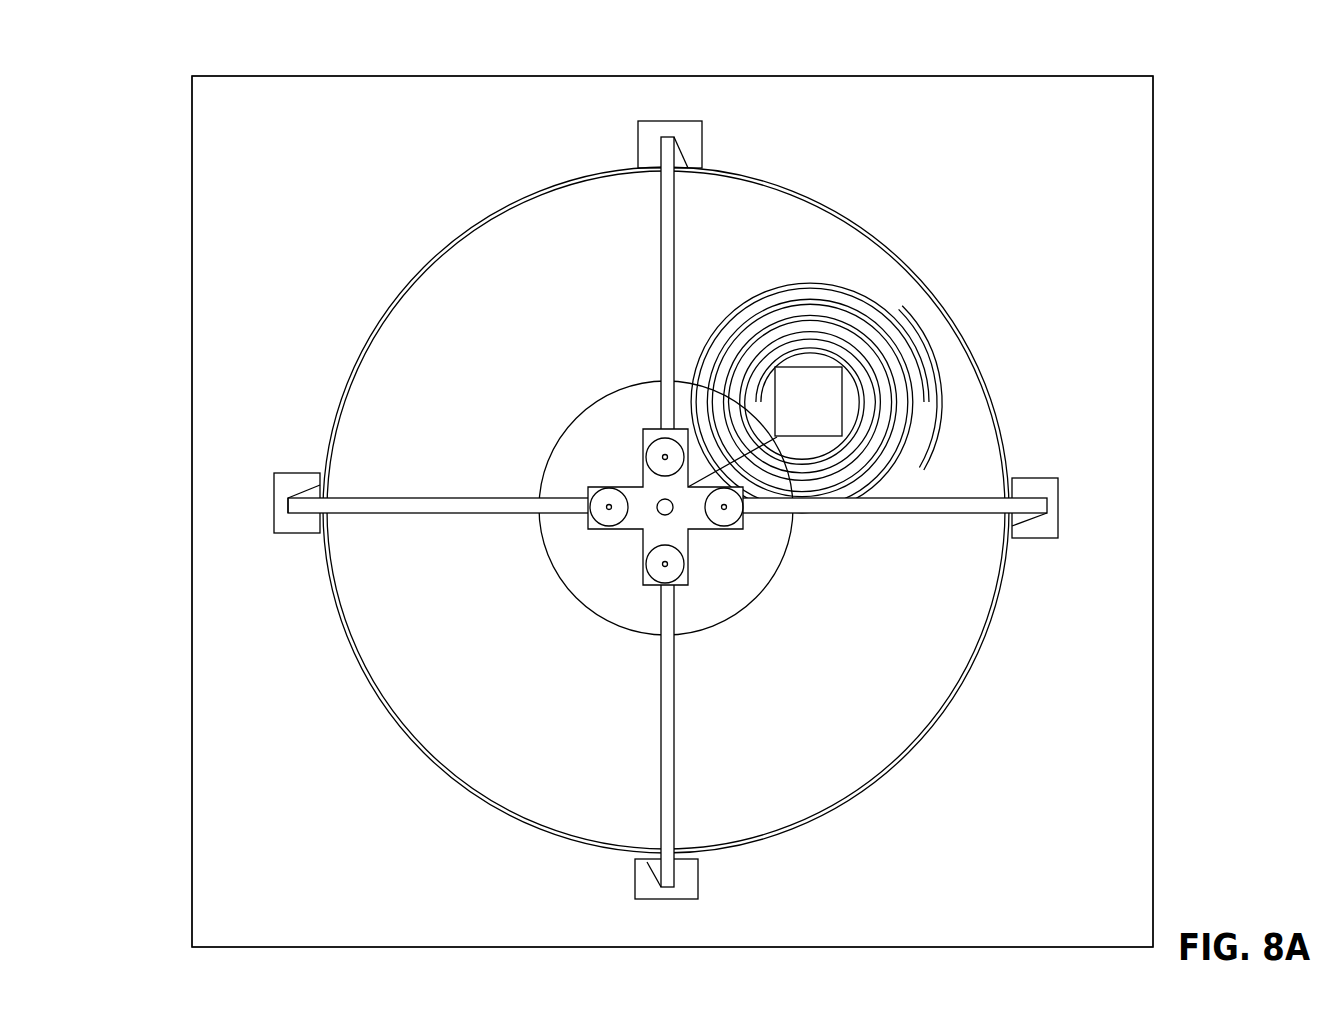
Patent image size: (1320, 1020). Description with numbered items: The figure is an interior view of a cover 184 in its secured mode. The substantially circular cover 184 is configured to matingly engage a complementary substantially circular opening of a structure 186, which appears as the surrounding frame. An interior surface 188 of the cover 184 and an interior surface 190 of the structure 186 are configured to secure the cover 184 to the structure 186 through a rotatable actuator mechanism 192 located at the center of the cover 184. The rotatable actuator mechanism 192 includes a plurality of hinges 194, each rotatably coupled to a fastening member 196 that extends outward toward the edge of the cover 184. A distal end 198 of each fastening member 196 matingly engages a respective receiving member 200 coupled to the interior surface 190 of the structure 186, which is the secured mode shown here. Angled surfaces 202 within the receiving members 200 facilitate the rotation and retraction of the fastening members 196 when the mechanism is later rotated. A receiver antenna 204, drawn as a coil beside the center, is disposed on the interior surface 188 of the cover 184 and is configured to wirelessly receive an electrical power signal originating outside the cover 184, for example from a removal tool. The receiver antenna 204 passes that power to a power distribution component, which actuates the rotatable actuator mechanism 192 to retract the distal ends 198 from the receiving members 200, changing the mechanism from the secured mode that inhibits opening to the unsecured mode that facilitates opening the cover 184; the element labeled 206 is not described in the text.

The cover 184 is at (415, 313).
The structure 186 is at (472, 90).
The interior surface of the cover 188 is at (556, 230).
The interior surface of the structure 190 is at (311, 92).
The rotatable actuator mechanism 192 is at (567, 562).
The hinges 194 is at (603, 520).
The fastening member 196 is at (426, 498).
The distal end 198 is at (300, 508).
The receiving member 200 is at (275, 496).
The angled surfaces 202 is at (313, 494).
The receiver antenna 204 is at (808, 287).
The spring anchor 206 is at (800, 373).